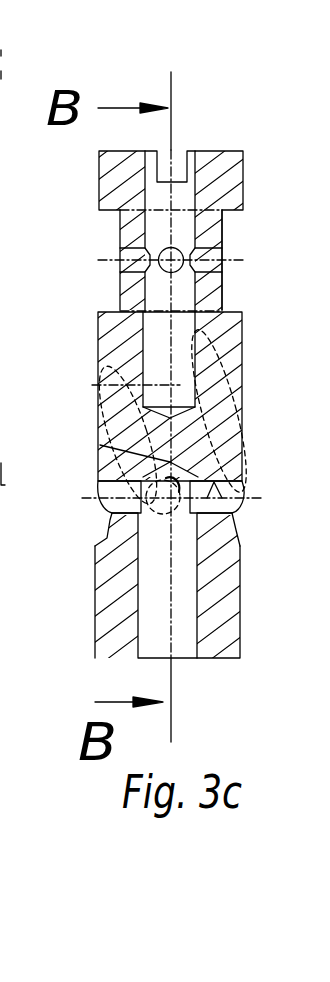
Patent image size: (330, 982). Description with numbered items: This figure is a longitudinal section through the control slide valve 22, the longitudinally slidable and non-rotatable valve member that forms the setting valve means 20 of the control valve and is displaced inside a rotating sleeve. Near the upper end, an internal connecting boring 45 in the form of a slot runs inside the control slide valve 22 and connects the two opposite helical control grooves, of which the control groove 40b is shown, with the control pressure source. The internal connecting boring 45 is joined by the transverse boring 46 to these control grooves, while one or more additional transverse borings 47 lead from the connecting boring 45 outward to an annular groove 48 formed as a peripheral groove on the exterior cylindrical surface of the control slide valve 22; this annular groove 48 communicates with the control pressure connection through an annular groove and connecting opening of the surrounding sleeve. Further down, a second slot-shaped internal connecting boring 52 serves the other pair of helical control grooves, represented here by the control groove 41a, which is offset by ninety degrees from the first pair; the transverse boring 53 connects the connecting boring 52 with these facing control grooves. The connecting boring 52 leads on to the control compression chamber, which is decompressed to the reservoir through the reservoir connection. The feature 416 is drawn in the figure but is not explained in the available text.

The setting valve means 20 is at (232, 160).
The control slide valve 22 is at (232, 160).
The internal connecting boring 45 is at (153, 215).
The transverse boring 47 is at (207, 258).
The annular groove 48 is at (224, 292).
The transverse boring 46 is at (150, 407).
The helical control groove 40b is at (108, 438).
The transverse boring 53 is at (233, 492).
The helical control groove 41a is at (230, 536).
The notch 416 is at (109, 530).
The internal connecting boring 52 is at (153, 605).